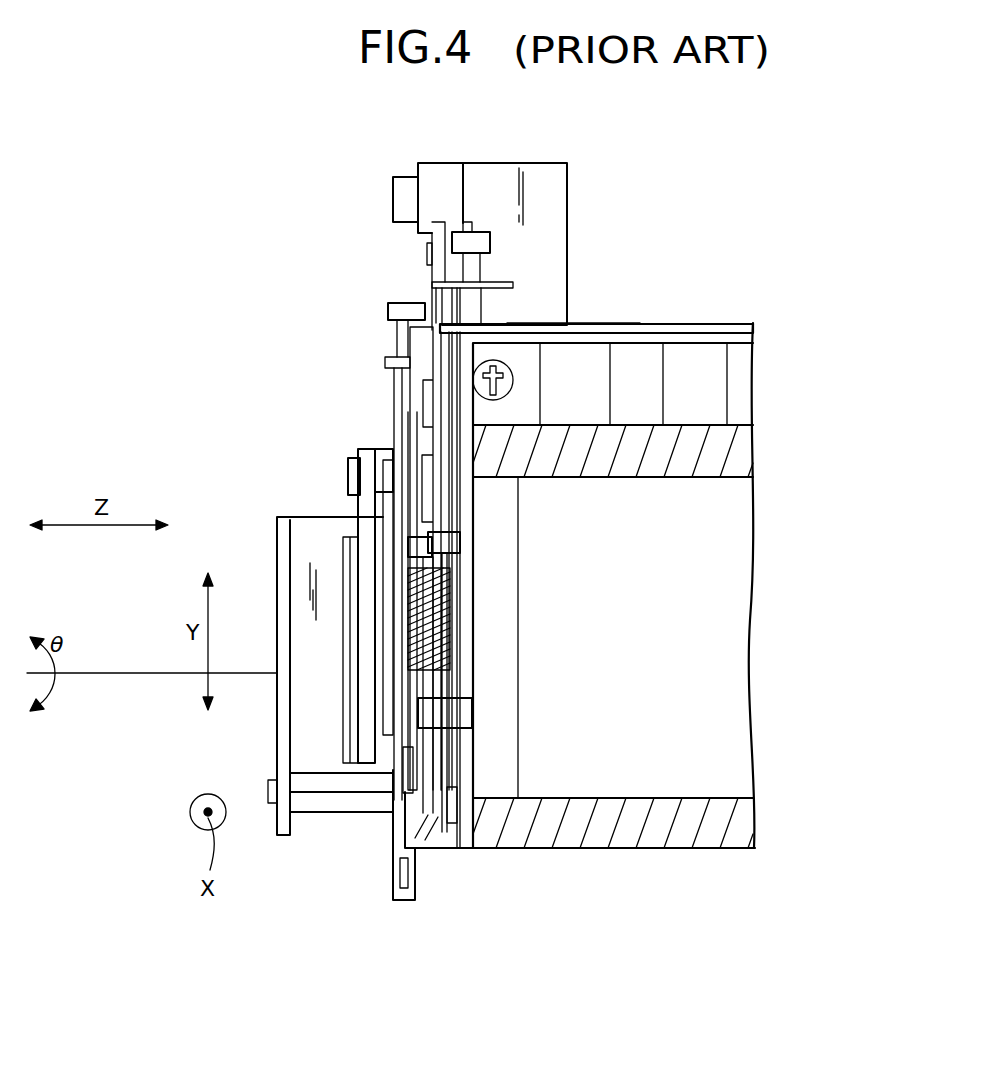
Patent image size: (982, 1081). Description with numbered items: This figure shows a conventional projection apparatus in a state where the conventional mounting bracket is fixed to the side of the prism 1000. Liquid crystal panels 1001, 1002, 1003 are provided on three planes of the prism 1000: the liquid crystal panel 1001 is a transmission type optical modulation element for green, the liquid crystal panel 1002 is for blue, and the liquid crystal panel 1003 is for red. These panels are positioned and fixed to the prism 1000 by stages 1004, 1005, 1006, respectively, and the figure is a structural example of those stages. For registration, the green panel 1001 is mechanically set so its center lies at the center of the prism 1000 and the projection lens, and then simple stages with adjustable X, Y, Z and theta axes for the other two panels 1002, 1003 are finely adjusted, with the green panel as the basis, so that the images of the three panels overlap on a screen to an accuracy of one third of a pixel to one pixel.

The prism 1000 is at (727, 731).
The liquid crystal panel 1001 is at (370, 448).
The liquid crystal panel 1002 is at (405, 551).
The liquid crystal panel 1003 is at (354, 476).
The stage 1004 is at (408, 628).
The stage 1005 is at (434, 544).
The stage 1006 is at (445, 713).